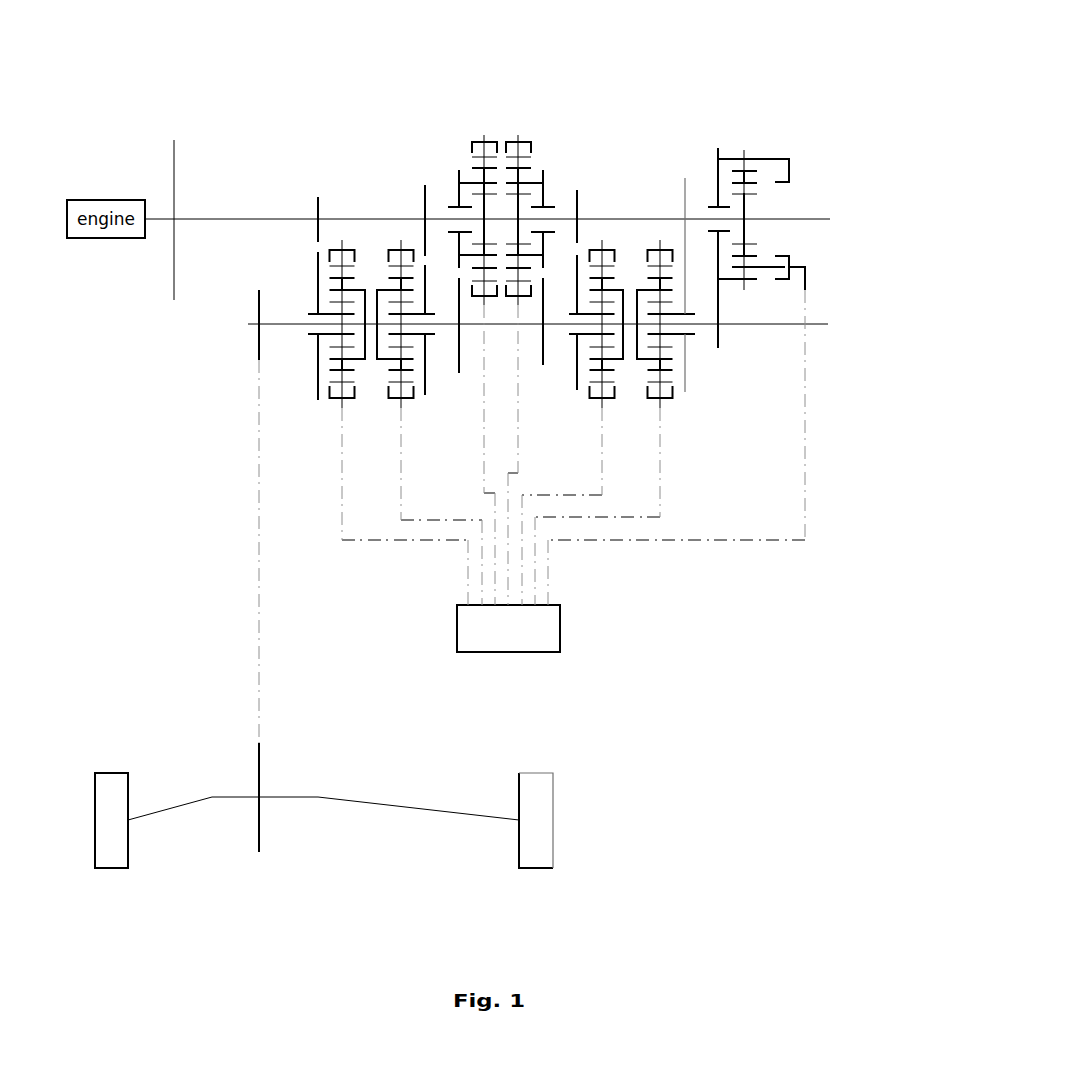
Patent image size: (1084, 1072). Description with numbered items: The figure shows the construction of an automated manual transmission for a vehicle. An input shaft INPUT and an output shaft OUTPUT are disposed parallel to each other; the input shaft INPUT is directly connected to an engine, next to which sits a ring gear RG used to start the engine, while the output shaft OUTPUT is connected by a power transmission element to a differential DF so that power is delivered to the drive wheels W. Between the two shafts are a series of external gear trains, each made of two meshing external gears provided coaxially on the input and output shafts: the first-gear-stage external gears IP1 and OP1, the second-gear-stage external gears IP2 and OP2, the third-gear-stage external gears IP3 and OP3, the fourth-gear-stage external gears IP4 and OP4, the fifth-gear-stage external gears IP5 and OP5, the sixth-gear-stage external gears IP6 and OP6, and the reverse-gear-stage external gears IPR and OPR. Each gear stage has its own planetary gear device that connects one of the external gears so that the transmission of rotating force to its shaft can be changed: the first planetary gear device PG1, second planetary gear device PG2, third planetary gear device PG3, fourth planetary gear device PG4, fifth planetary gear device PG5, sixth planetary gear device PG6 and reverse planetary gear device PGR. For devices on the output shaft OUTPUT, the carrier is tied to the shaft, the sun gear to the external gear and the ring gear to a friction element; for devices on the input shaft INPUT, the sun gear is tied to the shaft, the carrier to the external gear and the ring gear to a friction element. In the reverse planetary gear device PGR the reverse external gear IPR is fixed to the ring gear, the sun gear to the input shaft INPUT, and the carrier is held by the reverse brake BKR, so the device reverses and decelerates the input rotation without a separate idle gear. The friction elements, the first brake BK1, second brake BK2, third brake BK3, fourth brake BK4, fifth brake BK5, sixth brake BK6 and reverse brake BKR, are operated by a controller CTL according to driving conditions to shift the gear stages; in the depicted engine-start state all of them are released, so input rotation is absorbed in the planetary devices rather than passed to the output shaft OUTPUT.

The ring gear RG is at (172, 208).
The input shaft INPUT is at (520, 222).
The output shaft OUTPUT is at (582, 327).
The first planetary gear device PG1 is at (333, 406).
The second planetary gear device PG2 is at (387, 406).
The third planetary gear device PG3 is at (484, 130).
The fourth planetary gear device PG4 is at (518, 130).
The fifth planetary gear device PG5 is at (615, 403).
The sixth planetary gear device PG6 is at (672, 403).
The reverse planetary gear device PGR is at (746, 154).
The first brake BK1 is at (342, 248).
The second brake BK2 is at (401, 248).
The third brake BK3 is at (478, 141).
The fourth brake BK4 is at (526, 141).
The fifth brake BK5 is at (602, 248).
The sixth brake BK6 is at (660, 248).
The reverse brake BKR is at (791, 164).
The first-gear-stage external gear IP1 is at (317, 195).
The second-gear-stage external gear IP2 is at (424, 183).
The third-gear-stage external gear IP3 is at (458, 169).
The fourth-gear-stage external gear IP4 is at (544, 169).
The fifth-gear-stage external gear IP5 is at (578, 190).
The sixth-gear-stage external gear IP6 is at (686, 178).
The reverse-gear-stage external gear IPR is at (719, 147).
The first-gear-stage external gear OP1 is at (316, 401).
The second-gear-stage external gear OP2 is at (424, 398).
The third-gear-stage external gear OP3 is at (458, 375).
The fourth-gear-stage external gear OP4 is at (543, 367).
The fifth-gear-stage external gear OP5 is at (577, 393).
The sixth-gear-stage external gear OP6 is at (687, 393).
The reverse-gear-stage external gear OPR is at (722, 350).
The controller CTL is at (573, 471).
The differential DF is at (274, 825).
The drive wheel W is at (120, 868).